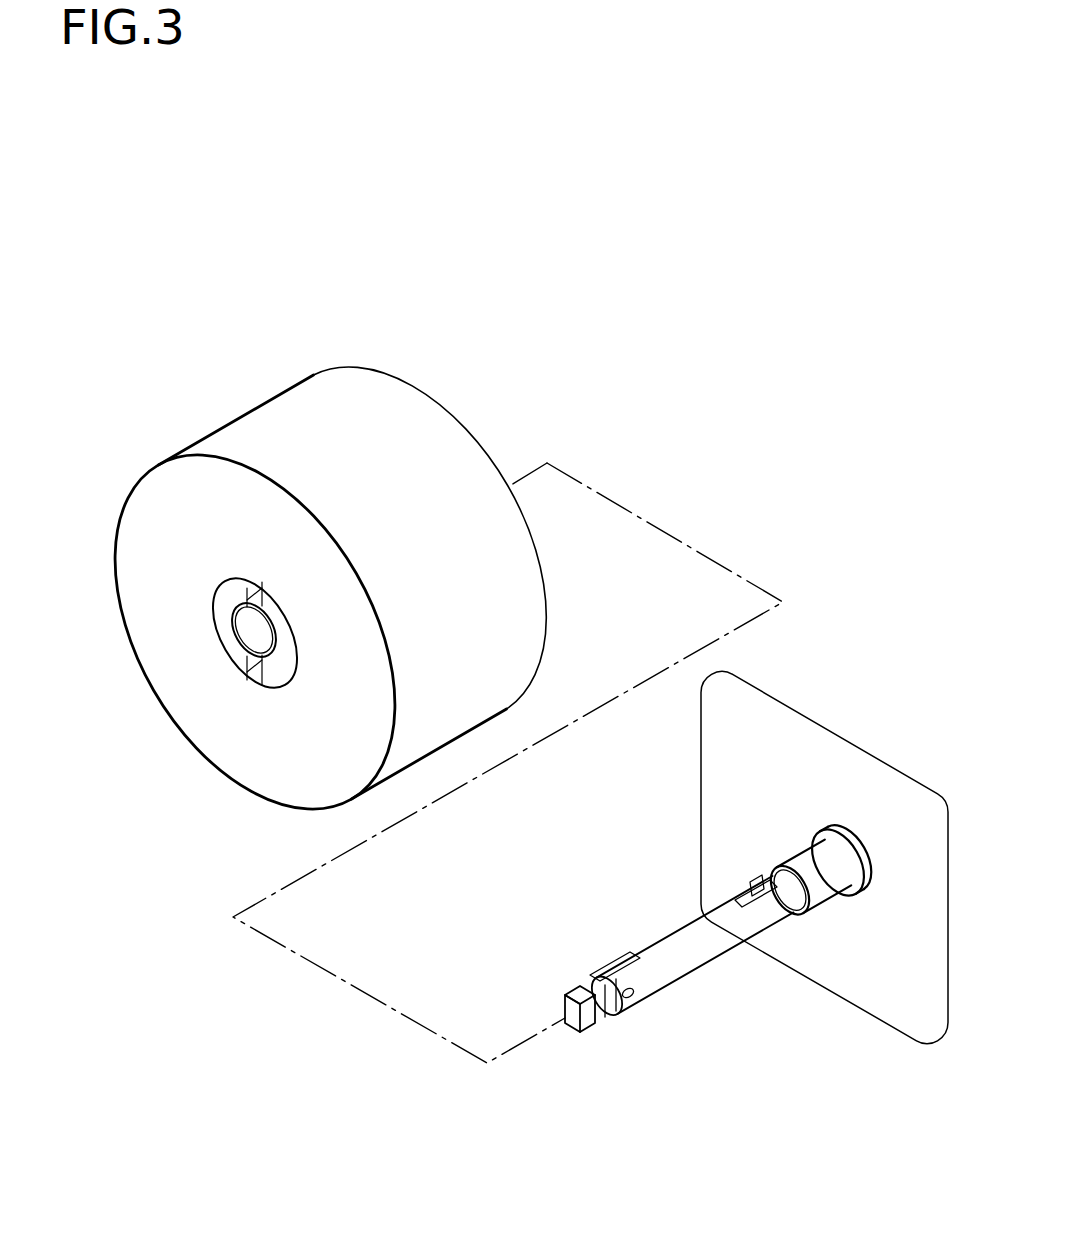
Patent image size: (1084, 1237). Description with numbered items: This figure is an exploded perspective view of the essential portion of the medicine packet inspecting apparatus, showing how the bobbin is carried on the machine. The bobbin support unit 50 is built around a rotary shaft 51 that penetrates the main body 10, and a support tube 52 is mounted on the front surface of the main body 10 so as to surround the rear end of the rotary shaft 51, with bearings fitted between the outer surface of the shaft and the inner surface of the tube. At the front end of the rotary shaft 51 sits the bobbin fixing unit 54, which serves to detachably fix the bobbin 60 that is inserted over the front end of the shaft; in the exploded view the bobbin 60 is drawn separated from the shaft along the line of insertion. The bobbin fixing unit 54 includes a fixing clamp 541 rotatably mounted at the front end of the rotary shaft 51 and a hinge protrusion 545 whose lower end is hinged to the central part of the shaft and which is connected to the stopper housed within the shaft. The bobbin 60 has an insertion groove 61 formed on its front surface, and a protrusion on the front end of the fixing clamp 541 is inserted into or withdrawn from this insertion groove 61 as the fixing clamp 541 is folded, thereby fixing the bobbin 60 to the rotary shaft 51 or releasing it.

The main body 10 is at (882, 1005).
The bobbin support unit 50 is at (714, 970).
The rotary shaft 51 is at (683, 963).
The support tube 52 is at (820, 897).
The bobbin fixing unit 54 is at (612, 1068).
The fixing clamp 541 is at (588, 1020).
The hinge protrusion 545 is at (757, 870).
The bobbin 60 is at (265, 783).
The insertion groove 61 is at (248, 600).